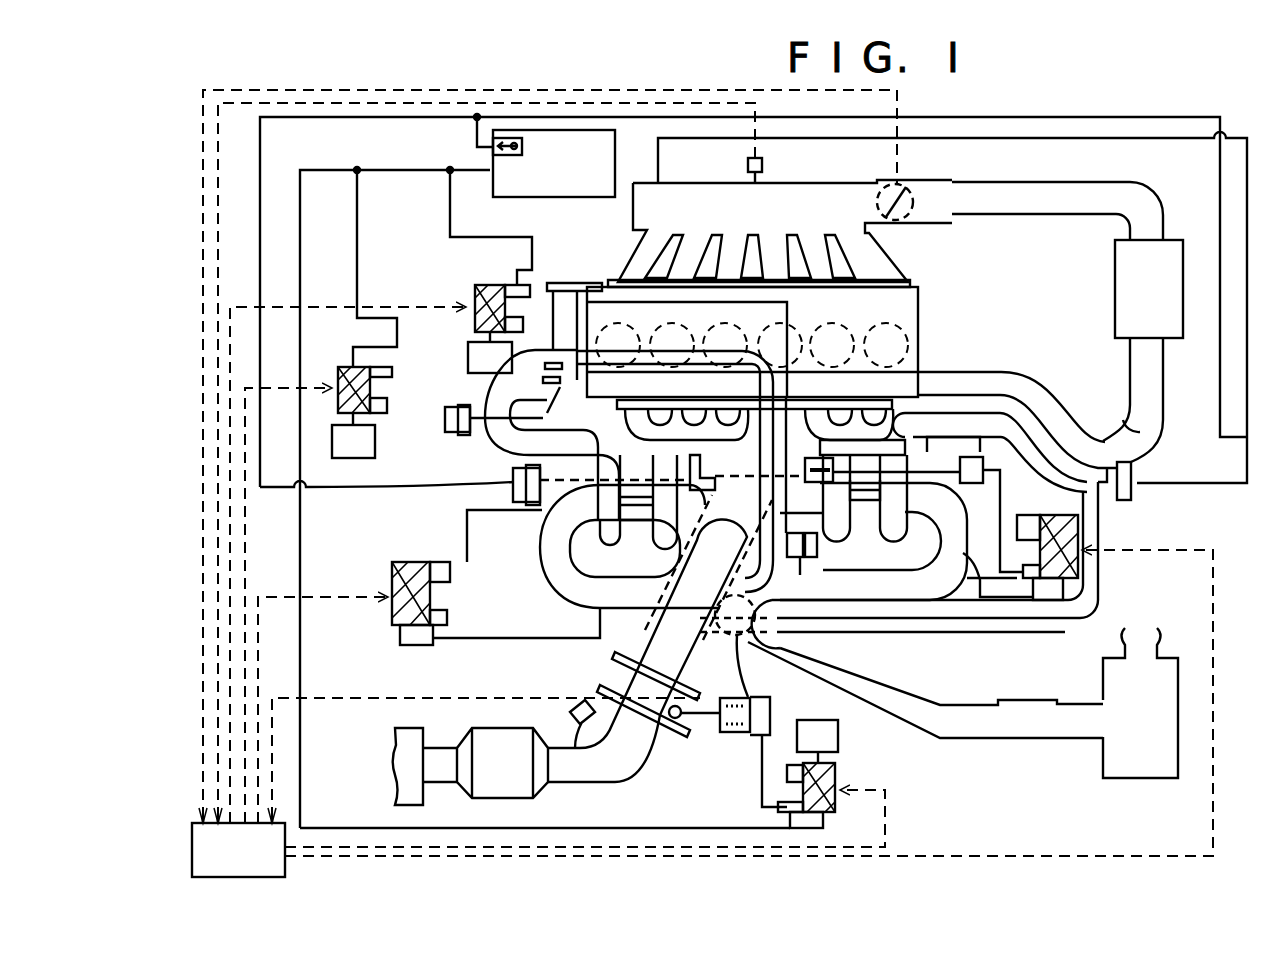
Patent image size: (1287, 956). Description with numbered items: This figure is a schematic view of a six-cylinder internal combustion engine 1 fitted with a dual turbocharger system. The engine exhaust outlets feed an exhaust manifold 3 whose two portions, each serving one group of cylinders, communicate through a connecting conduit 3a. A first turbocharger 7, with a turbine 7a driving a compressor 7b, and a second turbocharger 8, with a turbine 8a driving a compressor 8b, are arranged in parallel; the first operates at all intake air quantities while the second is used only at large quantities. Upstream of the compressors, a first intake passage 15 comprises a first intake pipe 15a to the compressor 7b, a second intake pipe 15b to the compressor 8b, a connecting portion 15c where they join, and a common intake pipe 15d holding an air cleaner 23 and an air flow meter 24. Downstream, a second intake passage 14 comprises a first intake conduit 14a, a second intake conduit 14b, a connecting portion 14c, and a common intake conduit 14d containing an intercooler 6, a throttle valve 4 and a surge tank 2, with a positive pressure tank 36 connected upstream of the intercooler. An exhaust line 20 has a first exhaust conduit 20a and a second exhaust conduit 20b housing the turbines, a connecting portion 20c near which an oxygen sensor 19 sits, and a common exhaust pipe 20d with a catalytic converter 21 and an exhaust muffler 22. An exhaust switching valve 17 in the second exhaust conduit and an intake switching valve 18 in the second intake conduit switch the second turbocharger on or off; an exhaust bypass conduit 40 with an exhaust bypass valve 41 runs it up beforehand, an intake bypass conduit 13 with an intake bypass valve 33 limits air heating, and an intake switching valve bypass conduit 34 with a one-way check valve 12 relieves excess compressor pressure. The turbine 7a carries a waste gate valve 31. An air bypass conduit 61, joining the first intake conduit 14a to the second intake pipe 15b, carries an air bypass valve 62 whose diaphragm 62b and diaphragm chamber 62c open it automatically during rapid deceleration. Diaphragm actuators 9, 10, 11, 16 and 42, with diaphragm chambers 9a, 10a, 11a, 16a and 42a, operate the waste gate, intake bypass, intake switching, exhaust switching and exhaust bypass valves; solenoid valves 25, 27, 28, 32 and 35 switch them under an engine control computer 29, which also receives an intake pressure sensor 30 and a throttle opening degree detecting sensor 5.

The internal combustion engine 1 is at (928, 300).
The surge tank 2 is at (697, 195).
The exhaust manifold 3 is at (740, 405).
The connecting conduit 3a is at (786, 400).
The throttle valve 4 is at (900, 215).
The throttle opening degree detecting sensor 5 is at (901, 192).
The intercooler 6 is at (1170, 245).
The first turbocharger 7 is at (873, 520).
The turbine 7a is at (842, 535).
The compressor 7b is at (897, 535).
The second turbocharger 8 is at (630, 531).
The turbine 8a is at (630, 550).
The compressor 8b is at (570, 540).
The actuator 9 is at (975, 483).
The diaphragm chamber 9a is at (985, 467).
The actuator 10 is at (889, 587).
The diaphragm chamber 10a is at (765, 565).
The actuator 11 is at (455, 405).
The diaphragm chamber 11a is at (445, 418).
The one-way check valve 12 is at (560, 390).
The intake bypass conduit 13 is at (570, 343).
The second intake passage 14 is at (1130, 372).
The first intake conduit 14a is at (1055, 445).
The second intake conduit 14b is at (1040, 372).
The connecting portion 14c is at (1163, 384).
The common intake conduit 14d is at (1037, 185).
The first intake passage 15 is at (880, 685).
The first intake pipe 15a is at (998, 576).
The second intake pipe 15b is at (560, 600).
The connecting portion 15c is at (742, 665).
The common intake pipe 15d is at (935, 740).
The actuator 16 is at (745, 735).
The diaphragm chamber 16a is at (762, 790).
The exhaust switching valve 17 is at (676, 720).
The intake switching valve 18 is at (468, 358).
The oxygen sensor 19 is at (570, 710).
The exhaust line 20 is at (660, 752).
The first exhaust conduit 20a is at (612, 692).
The second exhaust conduit 20b is at (630, 680).
The connecting portion 20c is at (625, 778).
The common exhaust pipe 20d is at (440, 750).
The catalytic converter 21 is at (535, 795).
The exhaust muffler 22 is at (395, 750).
The air cleaner 23 is at (1140, 778).
The air flow meter 24 is at (1030, 738).
The three-way solenoid valve 25 is at (340, 367).
The three-way solenoid valve 27 is at (470, 288).
The three-way solenoid valve 28 is at (838, 762).
The engine control computer 29 is at (200, 823).
The intake pressure sensor 30 is at (764, 166).
The waste gate valve 31 is at (835, 458).
The two-way solenoid valve 32 is at (408, 562).
The intake bypass valve 33 is at (815, 565).
The intake switching valve bypass conduit 34 is at (552, 363).
The solenoid valve 35 is at (1050, 515).
The positive pressure tank 36 is at (515, 197).
The exhaust bypass conduit 40 is at (682, 550).
The exhaust bypass valve 41 is at (712, 465).
The actuator 42 is at (513, 490).
The diaphragm chamber 42a is at (513, 472).
The air bypass conduit 61 is at (1098, 590).
The air bypass valve 62 is at (1135, 505).
The diaphragm 62b is at (1138, 490).
The diaphragm chamber 62c is at (1140, 470).